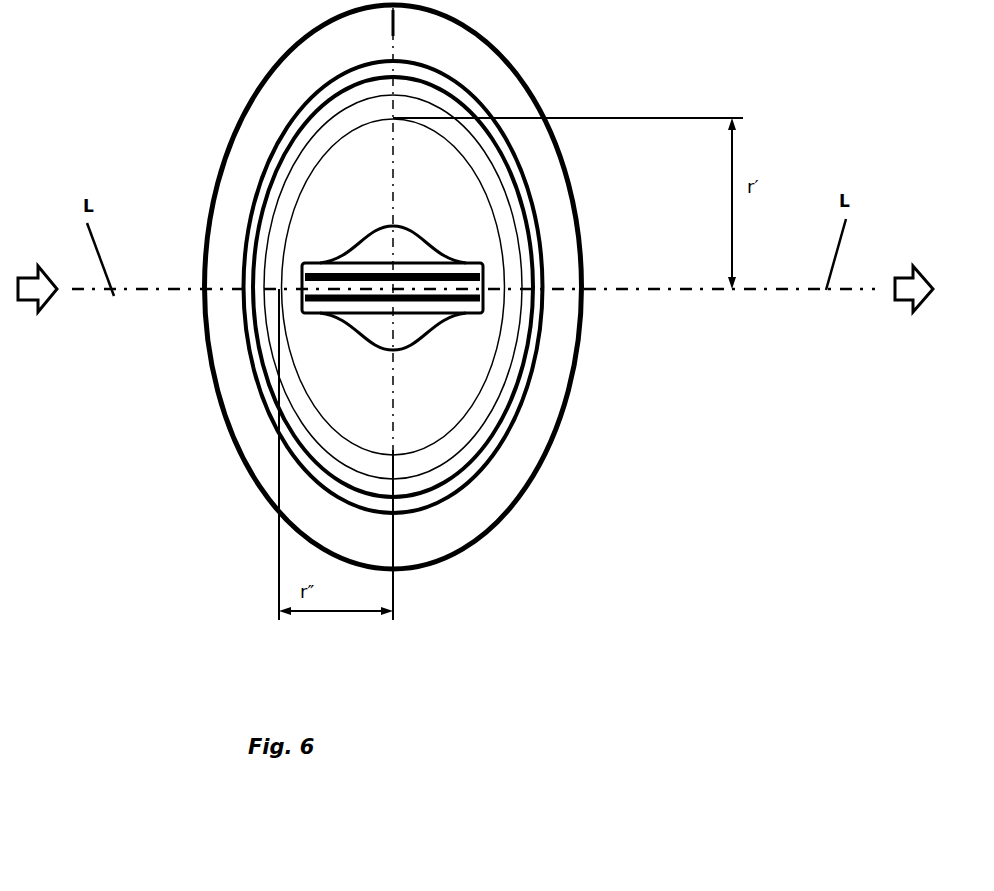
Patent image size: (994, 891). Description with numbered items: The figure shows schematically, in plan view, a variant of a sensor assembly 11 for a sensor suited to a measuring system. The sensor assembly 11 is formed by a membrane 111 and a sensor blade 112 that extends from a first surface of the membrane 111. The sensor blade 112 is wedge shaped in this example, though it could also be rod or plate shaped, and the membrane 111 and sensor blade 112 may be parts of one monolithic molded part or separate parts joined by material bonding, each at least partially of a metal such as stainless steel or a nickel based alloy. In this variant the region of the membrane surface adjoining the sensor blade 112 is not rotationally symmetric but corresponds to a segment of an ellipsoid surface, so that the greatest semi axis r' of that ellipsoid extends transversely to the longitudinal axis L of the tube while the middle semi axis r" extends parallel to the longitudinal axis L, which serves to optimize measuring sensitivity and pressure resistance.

The sensor assembly 11 is at (190, 139).
The membrane 111 is at (466, 218).
The sensor blade 112 is at (332, 232).